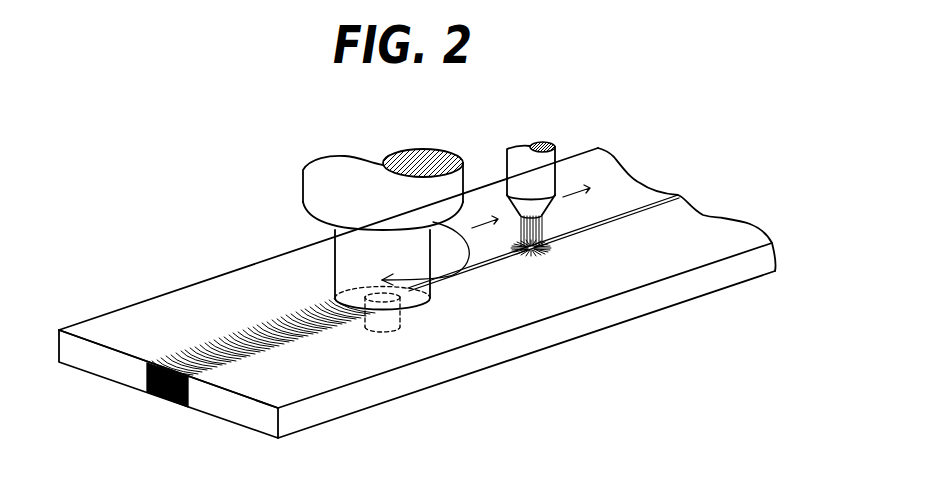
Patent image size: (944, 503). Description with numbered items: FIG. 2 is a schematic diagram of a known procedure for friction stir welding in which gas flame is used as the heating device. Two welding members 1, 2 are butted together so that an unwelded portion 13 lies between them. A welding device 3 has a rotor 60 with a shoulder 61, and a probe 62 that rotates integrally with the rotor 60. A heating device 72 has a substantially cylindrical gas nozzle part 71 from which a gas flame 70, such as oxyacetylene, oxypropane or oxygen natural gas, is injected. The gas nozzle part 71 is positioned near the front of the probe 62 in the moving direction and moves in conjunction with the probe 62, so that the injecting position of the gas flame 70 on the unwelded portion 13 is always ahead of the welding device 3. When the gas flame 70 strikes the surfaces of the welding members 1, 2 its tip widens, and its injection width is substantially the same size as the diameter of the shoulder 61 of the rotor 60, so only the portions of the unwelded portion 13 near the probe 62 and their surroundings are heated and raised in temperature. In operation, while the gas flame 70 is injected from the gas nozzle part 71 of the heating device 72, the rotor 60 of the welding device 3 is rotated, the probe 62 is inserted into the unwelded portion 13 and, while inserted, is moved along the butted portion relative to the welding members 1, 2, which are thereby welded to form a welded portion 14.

The welding member 1 is at (108, 367).
The welding member 2 is at (223, 410).
The welding device 3 is at (372, 222).
The unwelded portion 13 is at (678, 196).
The welded portion 14 is at (163, 398).
The rotor 60 is at (332, 231).
The shoulder 61 is at (330, 298).
The probe 62 is at (400, 313).
The gas flame 70 is at (555, 228).
The gas nozzle part 71 is at (512, 165).
The heating device 72 is at (556, 142).